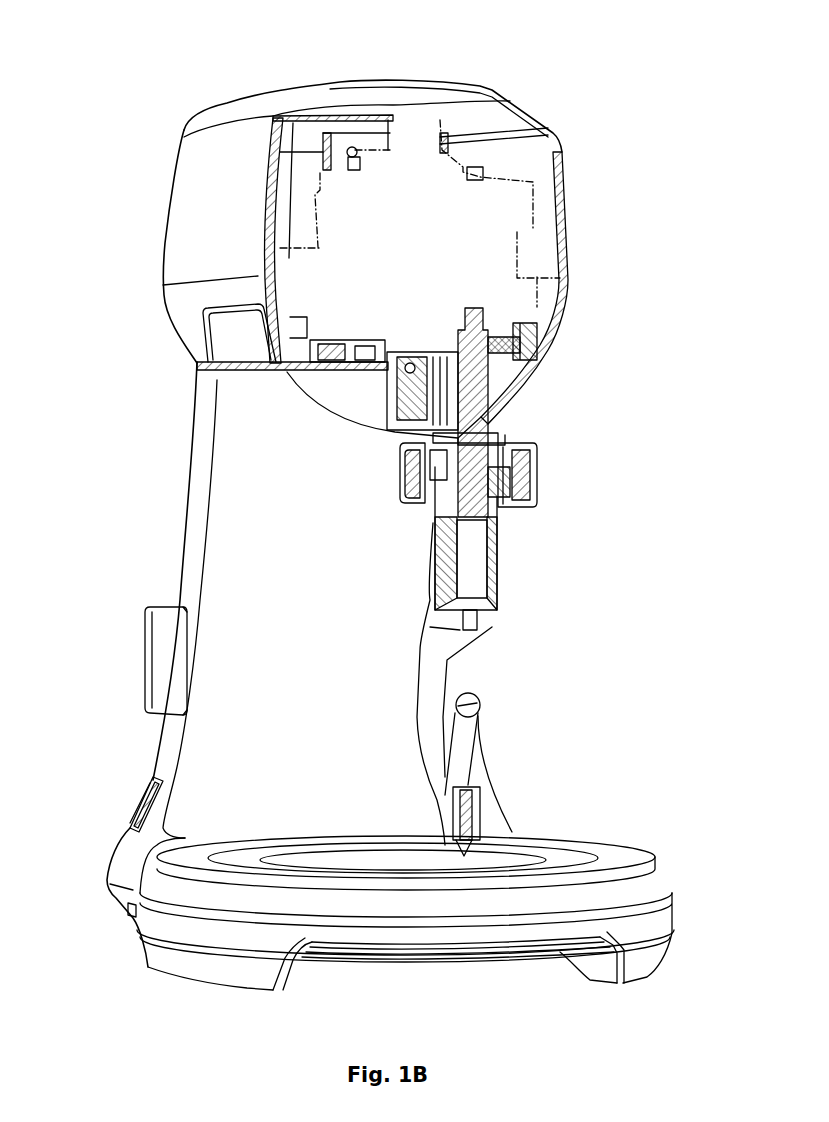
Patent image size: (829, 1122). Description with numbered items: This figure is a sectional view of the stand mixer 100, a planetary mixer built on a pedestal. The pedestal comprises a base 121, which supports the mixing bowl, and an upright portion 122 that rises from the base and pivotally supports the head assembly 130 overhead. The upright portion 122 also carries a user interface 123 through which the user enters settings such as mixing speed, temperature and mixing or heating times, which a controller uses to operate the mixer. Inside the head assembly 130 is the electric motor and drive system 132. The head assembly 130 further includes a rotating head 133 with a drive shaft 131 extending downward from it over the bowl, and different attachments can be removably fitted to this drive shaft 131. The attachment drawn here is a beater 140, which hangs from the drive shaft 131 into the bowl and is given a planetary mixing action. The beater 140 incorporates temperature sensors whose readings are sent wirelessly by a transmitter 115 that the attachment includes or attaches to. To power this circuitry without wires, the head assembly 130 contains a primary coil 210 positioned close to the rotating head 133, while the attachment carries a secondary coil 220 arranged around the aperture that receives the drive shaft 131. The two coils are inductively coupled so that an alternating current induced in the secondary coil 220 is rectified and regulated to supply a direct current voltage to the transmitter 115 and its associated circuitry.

The stand mixer 100 is at (107, 28).
The head assembly 130 is at (562, 167).
The electric motor and drive system 132 is at (480, 229).
The primary coil 210 is at (536, 330).
The rotating head 133 is at (525, 378).
The drive shaft 131 is at (490, 418).
The transmitter 115 is at (395, 477).
The secondary coil 220 is at (523, 448).
The beater 140 is at (500, 594).
The upright portion 122 is at (207, 423).
The user interface 123 is at (150, 800).
The base 121 is at (548, 848).